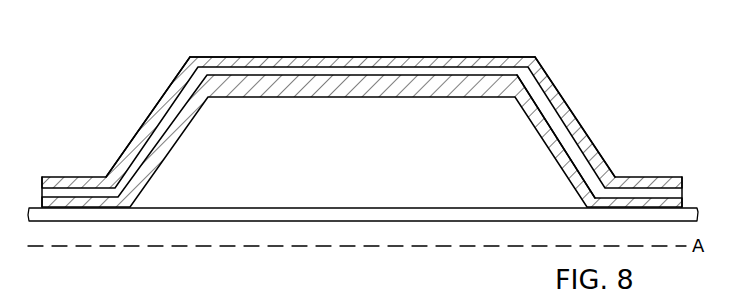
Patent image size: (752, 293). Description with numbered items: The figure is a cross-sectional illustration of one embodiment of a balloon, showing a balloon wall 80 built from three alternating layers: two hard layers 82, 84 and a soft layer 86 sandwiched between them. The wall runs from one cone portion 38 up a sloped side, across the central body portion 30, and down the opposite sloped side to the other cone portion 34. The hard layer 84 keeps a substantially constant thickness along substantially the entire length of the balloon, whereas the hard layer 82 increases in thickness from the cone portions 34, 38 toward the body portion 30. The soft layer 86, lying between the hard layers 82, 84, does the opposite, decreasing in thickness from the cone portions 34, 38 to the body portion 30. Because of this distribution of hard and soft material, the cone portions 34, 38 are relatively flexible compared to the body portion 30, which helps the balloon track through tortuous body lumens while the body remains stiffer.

The body portion 30 is at (539, 43).
The cone portion 34 is at (582, 113).
The cone portion 38 is at (139, 113).
The balloon wall 80 is at (362, 107).
The hard layer 82 is at (184, 127).
The hard layer 84 is at (170, 92).
The soft layer 86 is at (580, 154).